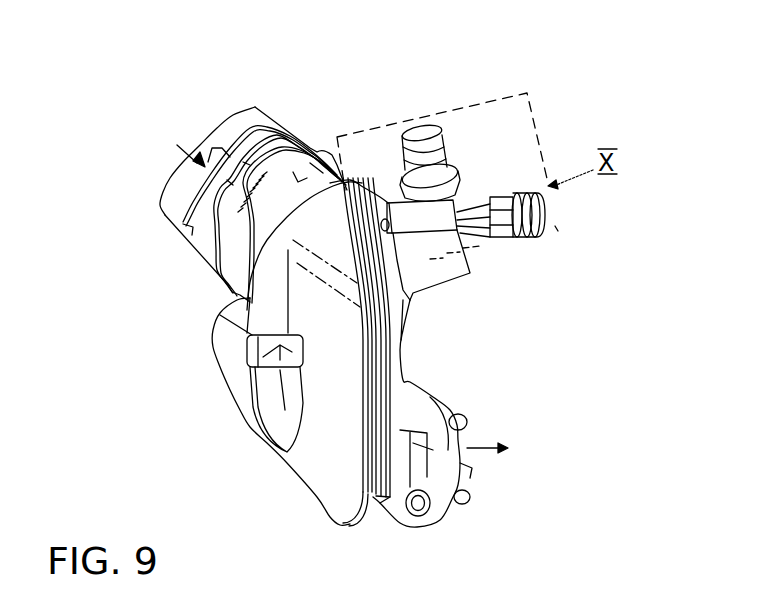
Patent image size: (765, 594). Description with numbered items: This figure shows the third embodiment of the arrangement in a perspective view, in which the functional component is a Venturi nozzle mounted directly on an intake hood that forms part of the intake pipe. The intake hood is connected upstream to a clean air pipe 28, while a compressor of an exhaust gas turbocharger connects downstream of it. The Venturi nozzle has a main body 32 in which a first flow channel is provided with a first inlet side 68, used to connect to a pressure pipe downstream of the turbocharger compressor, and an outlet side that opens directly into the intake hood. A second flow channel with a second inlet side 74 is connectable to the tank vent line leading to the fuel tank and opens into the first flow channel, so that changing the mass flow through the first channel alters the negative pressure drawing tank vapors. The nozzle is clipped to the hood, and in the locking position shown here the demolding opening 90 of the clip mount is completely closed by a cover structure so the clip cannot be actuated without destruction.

The clean air pipe 28 is at (175, 191).
The second inlet side 74 is at (412, 112).
The main body 32 is at (461, 188).
The demolding opening 90 is at (393, 180).
The first inlet side 68 is at (560, 207).